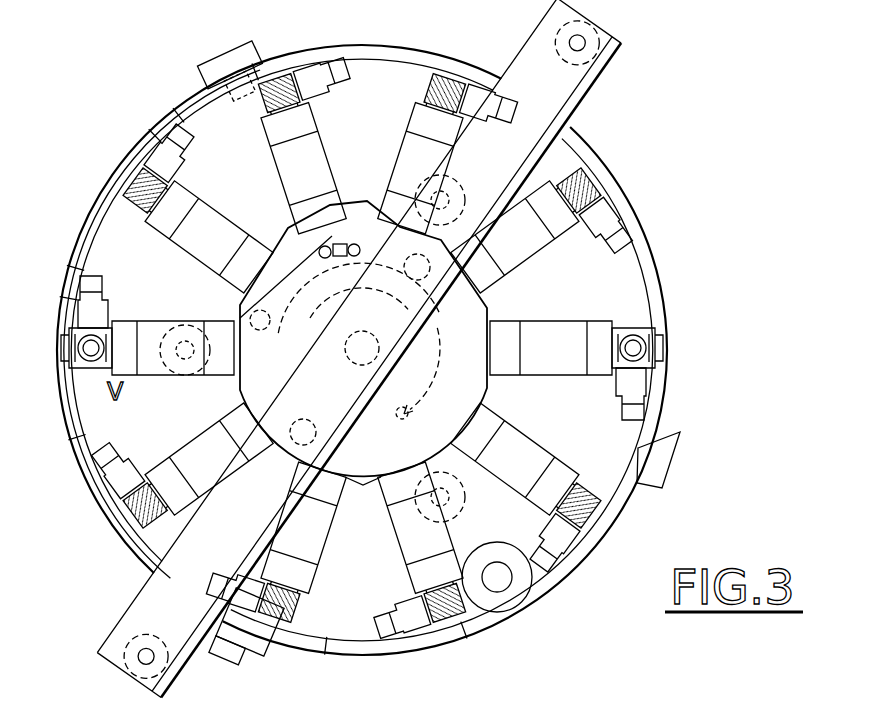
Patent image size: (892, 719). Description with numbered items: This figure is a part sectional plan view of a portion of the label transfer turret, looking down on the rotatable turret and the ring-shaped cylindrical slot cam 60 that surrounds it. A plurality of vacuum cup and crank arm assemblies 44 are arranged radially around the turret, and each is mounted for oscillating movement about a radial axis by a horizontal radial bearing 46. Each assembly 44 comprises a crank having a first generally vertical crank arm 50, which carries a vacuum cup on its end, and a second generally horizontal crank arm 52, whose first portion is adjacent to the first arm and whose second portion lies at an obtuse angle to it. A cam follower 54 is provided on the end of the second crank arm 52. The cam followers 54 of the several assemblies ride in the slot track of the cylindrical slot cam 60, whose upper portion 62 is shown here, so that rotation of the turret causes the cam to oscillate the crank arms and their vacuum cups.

The vacuum cup and crank arm assembly 44 is at (662, 342).
The horizontal radial bearing 46 is at (278, 180).
The first crank arm 50 is at (280, 84).
The second crank arm 52 is at (322, 76).
The cam follower 54 is at (640, 410).
The cylindrical slot cam 60 is at (616, 178).
The upper portion 62 is at (655, 316).